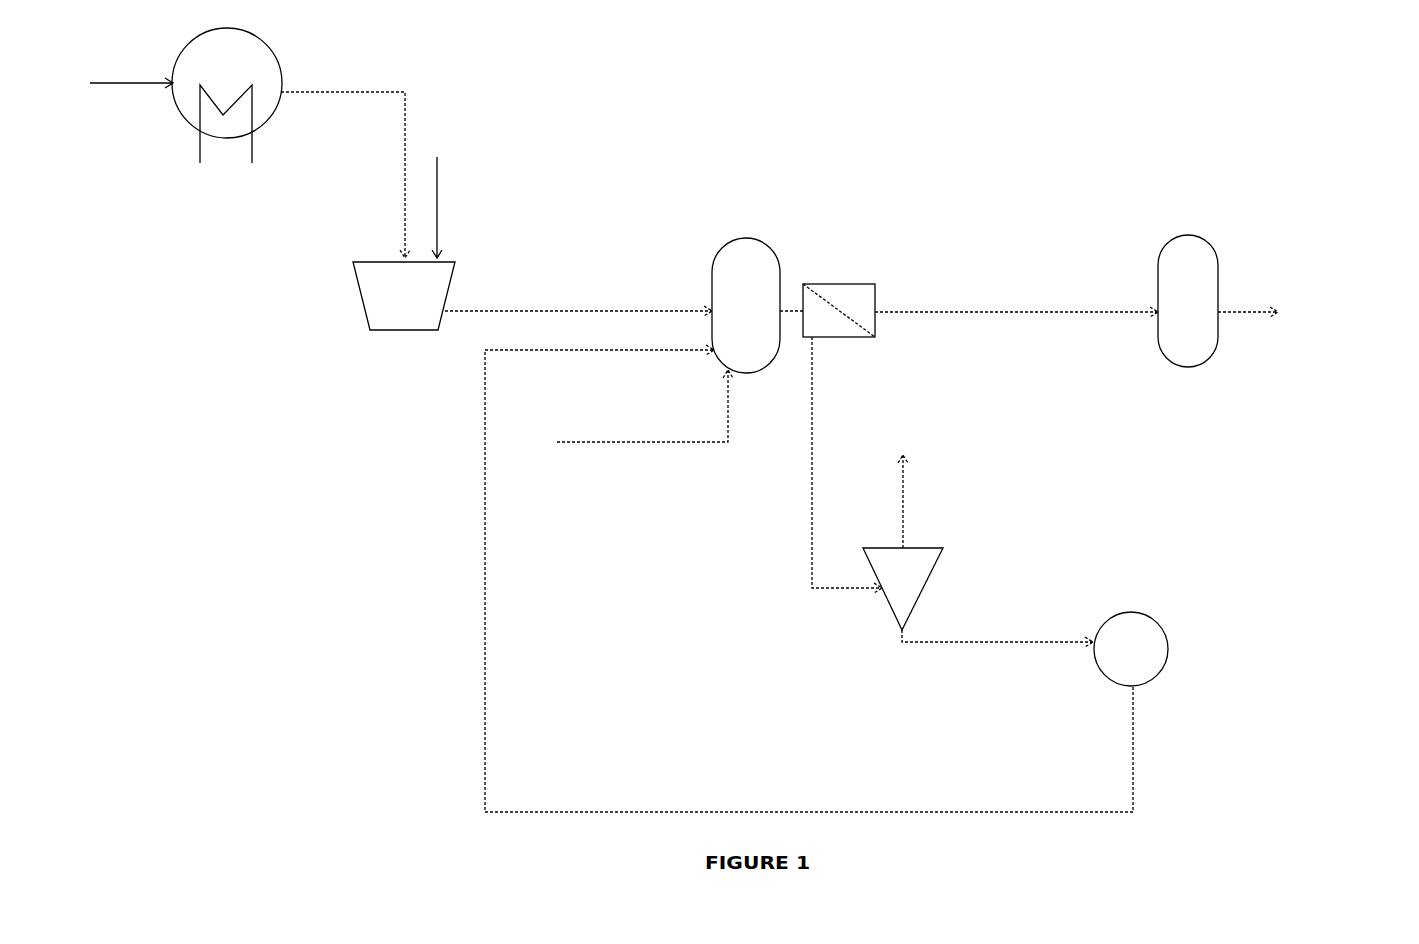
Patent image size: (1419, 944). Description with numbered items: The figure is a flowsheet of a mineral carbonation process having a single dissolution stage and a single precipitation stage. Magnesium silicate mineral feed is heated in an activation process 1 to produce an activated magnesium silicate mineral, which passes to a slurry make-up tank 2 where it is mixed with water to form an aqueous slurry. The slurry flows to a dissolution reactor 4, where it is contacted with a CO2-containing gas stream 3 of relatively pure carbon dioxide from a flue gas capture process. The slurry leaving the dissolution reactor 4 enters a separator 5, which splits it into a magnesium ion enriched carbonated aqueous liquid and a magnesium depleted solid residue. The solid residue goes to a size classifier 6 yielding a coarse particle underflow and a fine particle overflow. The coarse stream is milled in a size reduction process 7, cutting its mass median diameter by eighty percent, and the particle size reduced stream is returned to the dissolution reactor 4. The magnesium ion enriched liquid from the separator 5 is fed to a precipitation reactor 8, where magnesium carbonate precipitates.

The activation process 1 is at (269, 143).
The slurry make-up tank 2 is at (532, 234).
The CO2-containing gas stream 3 is at (629, 421).
The dissolution reactor 4 is at (809, 512).
The separator 5 is at (950, 443).
The size classifier 6 is at (995, 575).
The size reduction (milling) process 7 is at (1194, 656).
The precipitation reactor 8 is at (1261, 291).